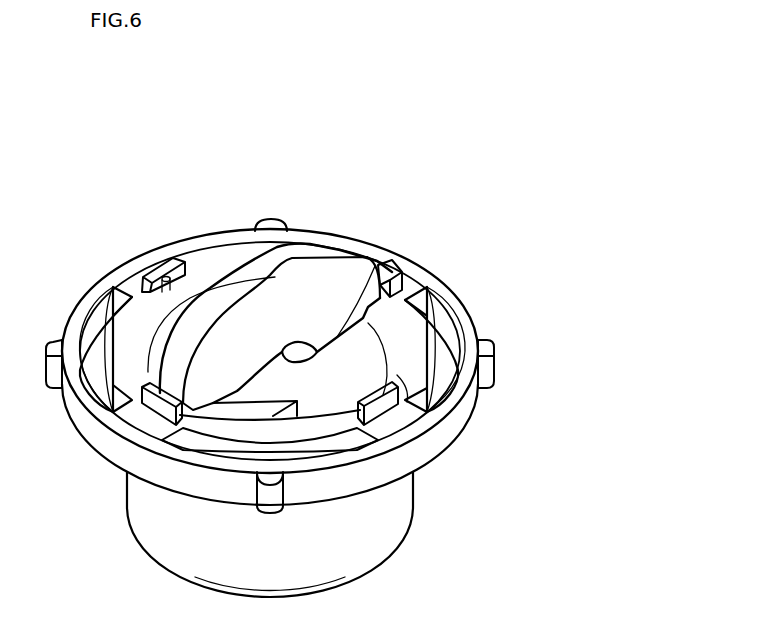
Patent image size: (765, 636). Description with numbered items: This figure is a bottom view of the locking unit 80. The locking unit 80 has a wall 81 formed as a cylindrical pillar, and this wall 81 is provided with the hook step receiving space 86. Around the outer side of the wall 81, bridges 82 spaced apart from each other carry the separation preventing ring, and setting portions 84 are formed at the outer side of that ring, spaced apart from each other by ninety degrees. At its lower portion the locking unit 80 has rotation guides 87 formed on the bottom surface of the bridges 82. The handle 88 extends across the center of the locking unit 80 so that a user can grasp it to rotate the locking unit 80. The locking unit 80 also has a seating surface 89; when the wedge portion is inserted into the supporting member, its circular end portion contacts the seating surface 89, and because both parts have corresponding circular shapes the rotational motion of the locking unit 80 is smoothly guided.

The locking unit 80 is at (429, 179).
The wall 81 is at (377, 533).
The bridges 82 is at (400, 422).
The setting portions 84 is at (492, 370).
The hook step receiving space 86 is at (358, 353).
The rotation guides 87 is at (156, 262).
The handle 88 is at (315, 247).
The seating surface 89 is at (378, 262).